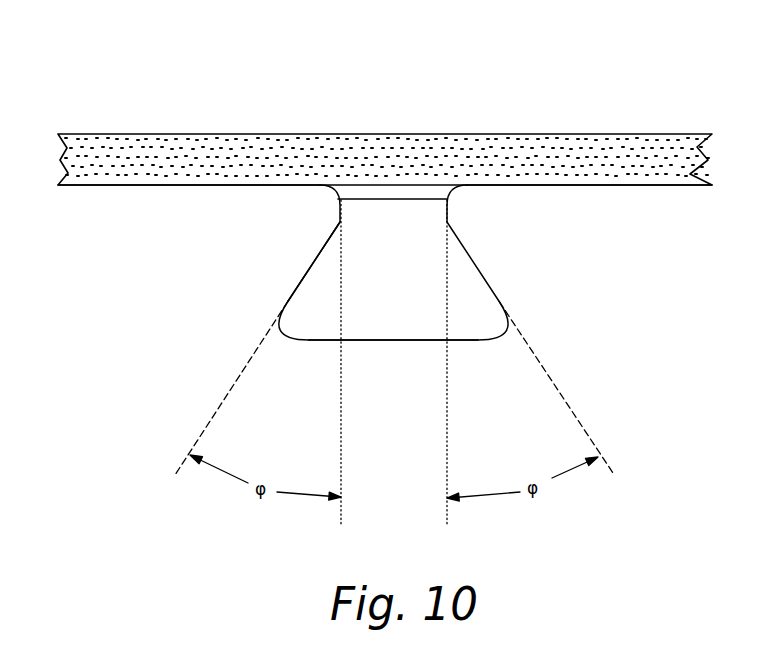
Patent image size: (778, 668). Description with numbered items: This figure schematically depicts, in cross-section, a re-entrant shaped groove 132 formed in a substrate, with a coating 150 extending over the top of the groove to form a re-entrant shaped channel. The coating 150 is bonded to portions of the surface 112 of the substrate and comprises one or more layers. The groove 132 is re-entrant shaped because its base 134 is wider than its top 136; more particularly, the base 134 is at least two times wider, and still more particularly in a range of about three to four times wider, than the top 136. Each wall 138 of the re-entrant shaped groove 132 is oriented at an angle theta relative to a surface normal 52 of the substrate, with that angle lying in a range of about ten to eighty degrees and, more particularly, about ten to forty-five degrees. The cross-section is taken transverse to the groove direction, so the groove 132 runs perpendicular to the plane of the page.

The coating 150 is at (167, 150).
The surface of the substrate 112 is at (157, 187).
The re-entrant shaped groove 132 is at (479, 315).
The wall of the re-entrant shaped groove 138 is at (315, 257).
The top of the groove 136 is at (395, 208).
The base of the groove 134 is at (460, 343).
The surface normal 52 is at (341, 503).